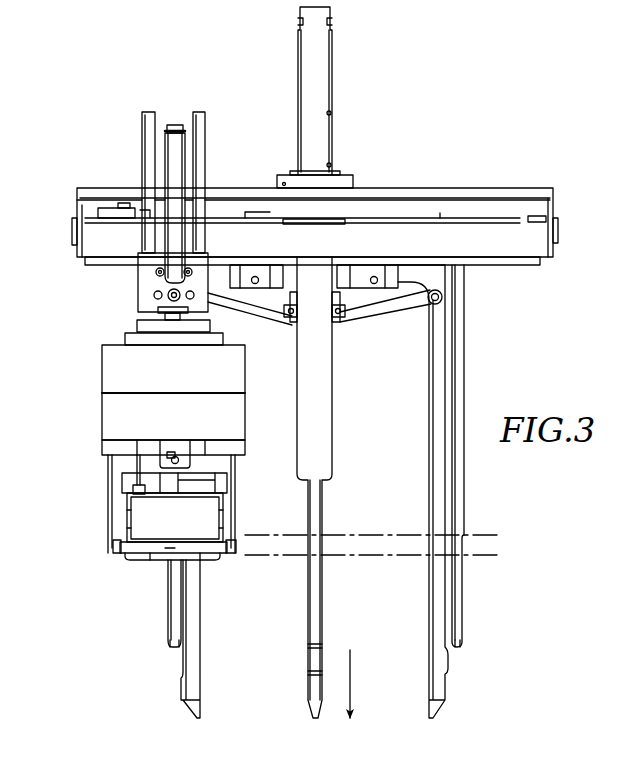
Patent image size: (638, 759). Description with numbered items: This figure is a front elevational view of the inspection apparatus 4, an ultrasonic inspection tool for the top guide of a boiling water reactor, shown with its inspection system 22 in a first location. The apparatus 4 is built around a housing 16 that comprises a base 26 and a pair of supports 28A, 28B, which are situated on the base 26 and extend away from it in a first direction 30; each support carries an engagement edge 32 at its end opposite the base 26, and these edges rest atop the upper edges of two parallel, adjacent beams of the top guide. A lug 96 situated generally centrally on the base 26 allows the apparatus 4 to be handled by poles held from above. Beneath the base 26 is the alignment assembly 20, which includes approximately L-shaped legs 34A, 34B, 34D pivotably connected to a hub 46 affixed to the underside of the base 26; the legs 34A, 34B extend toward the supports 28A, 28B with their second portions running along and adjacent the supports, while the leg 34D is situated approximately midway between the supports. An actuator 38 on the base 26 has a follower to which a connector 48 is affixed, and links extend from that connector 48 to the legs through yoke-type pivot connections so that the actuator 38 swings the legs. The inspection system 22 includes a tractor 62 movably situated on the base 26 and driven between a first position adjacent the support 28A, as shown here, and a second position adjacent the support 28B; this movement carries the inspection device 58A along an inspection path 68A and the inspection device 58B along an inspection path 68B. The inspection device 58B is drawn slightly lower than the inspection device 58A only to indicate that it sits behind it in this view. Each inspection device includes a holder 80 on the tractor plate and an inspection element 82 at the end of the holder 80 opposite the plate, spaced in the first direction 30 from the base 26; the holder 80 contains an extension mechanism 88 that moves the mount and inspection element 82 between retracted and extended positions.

The apparatus 4 is at (540, 147).
The housing 16 is at (553, 188).
The alignment assembly 20 is at (308, 700).
The inspection system 22 is at (103, 405).
The base 26 is at (548, 259).
The support 28A is at (170, 612).
The support 28B is at (462, 626).
The first direction 30 is at (352, 660).
The engagement edge 32 is at (172, 648).
The leg 34A is at (184, 694).
The leg 34B is at (448, 690).
The leg 34D is at (308, 580).
The actuator 38 is at (348, 330).
The hub 46 is at (405, 278).
The connector 48 is at (292, 323).
The inspection device 58A is at (112, 492).
The inspection device 58B is at (110, 548).
The tractor 62 is at (138, 193).
The inspection path 68A is at (502, 535).
The inspection path 68B is at (508, 568).
The holder 80 is at (103, 362).
The inspection element 82 is at (150, 558).
The extension mechanism 88 is at (176, 123).
The lug 96 is at (332, 58).